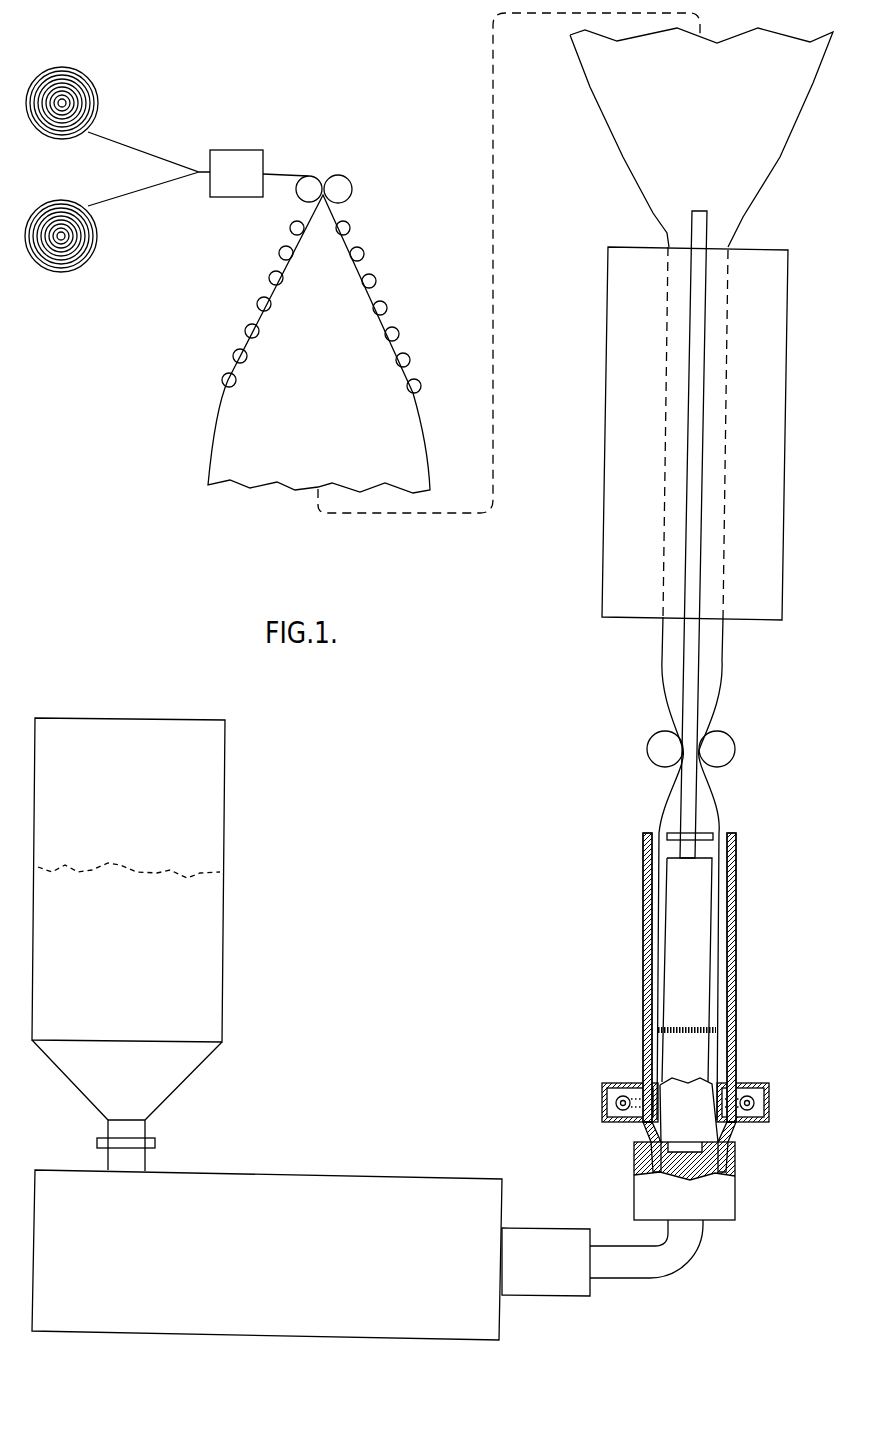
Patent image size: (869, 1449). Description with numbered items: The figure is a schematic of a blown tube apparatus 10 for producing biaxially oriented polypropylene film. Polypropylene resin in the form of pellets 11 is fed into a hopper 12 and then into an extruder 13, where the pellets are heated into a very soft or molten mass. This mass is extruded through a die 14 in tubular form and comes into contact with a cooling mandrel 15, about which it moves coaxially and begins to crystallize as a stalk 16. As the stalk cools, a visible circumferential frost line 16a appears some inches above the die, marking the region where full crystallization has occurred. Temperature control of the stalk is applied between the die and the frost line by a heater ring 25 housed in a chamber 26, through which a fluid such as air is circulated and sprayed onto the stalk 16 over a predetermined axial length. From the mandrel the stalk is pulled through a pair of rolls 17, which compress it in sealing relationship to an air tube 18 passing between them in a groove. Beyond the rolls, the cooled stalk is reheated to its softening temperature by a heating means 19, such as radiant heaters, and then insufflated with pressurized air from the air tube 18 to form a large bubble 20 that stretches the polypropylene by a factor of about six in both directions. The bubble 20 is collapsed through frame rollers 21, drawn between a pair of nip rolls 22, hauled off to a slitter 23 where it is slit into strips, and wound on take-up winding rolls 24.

The blown tube apparatus 10 is at (442, 831).
The pellets 11 is at (188, 877).
The hopper 12 is at (223, 972).
The extruder 13 is at (410, 1178).
The die 14 is at (738, 1196).
The cooling mandrel 15 is at (688, 1105).
The stalk 16 is at (727, 1132).
The frost line 16a is at (697, 1030).
The pair of rolls 17 is at (647, 750).
The air tube 18 is at (698, 658).
The heating means 19 is at (790, 438).
The bubble 20 is at (782, 157).
The frame rollers 21 is at (250, 322).
The nip rolls 22 is at (334, 177).
The slitter 23 is at (239, 149).
The take-up winding rolls 24 is at (97, 83).
The heater ring 25 is at (768, 1108).
The chamber 26 is at (602, 1107).